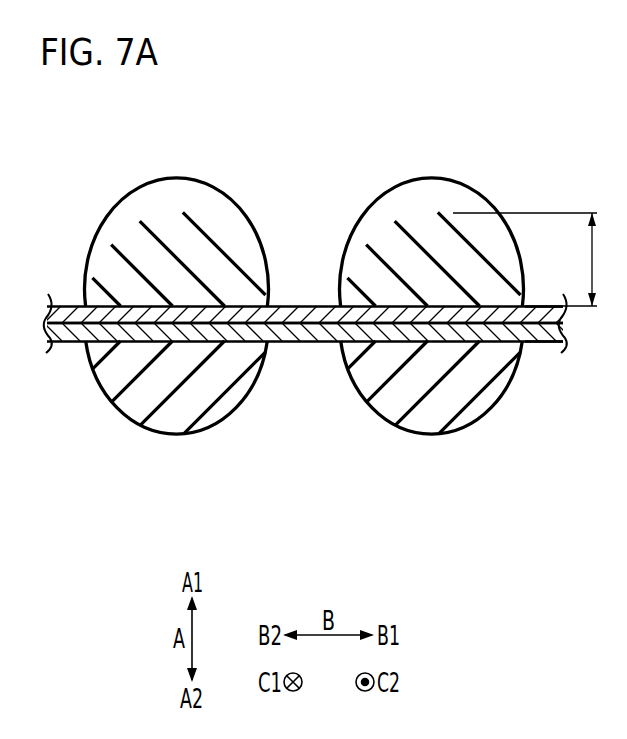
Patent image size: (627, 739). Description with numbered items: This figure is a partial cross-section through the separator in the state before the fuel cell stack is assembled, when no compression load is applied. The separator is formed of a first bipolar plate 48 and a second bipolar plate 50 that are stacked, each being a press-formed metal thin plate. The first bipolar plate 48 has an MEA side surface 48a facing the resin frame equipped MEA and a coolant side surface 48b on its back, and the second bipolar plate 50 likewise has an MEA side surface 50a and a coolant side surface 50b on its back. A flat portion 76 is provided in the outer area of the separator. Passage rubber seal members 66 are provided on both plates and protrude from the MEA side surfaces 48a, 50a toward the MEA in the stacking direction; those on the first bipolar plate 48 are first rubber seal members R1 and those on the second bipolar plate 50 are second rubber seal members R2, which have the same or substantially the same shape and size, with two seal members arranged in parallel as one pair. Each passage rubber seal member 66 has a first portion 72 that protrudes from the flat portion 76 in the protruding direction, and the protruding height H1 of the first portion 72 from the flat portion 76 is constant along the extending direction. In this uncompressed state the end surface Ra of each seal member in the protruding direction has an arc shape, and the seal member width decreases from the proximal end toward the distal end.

The first bipolar plate 48 is at (77, 335).
The MEA side surface 48a is at (128, 343).
The coolant side surface 48b is at (77, 318).
The second bipolar plate 50 is at (315, 316).
The MEA side surface 50a is at (285, 308).
The coolant side surface 50b is at (300, 330).
The passage rubber seal member 66 is at (220, 238).
The first portion 72 is at (133, 243).
The flat portion 76 is at (537, 304).
The end surface Ra is at (177, 211).
The first rubber seal member R1 is at (488, 410).
The second rubber seal member R2 is at (495, 242).
The protruding height H1 is at (528, 259).